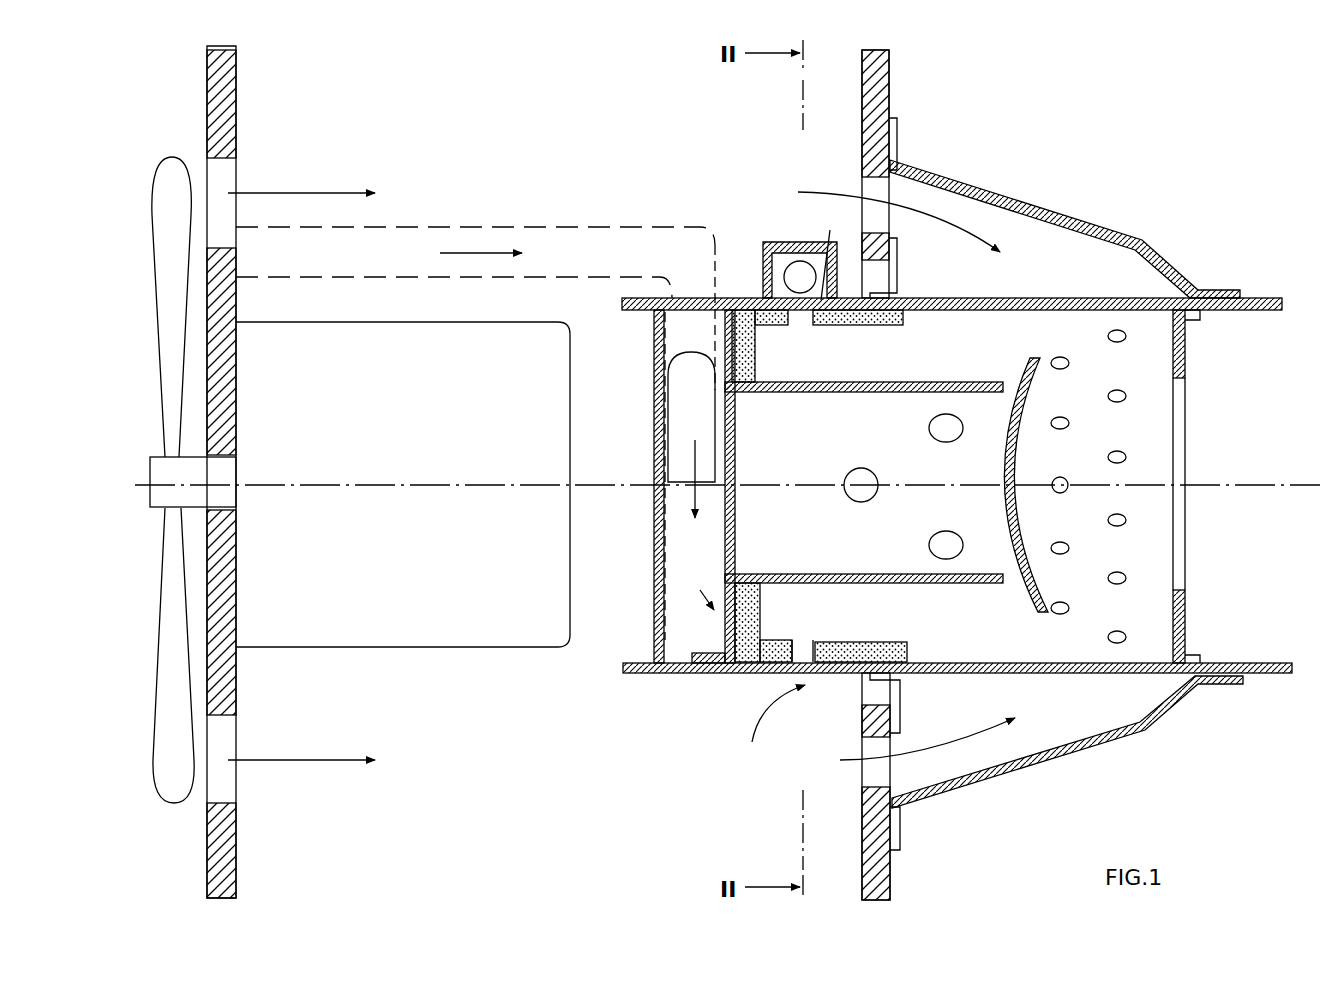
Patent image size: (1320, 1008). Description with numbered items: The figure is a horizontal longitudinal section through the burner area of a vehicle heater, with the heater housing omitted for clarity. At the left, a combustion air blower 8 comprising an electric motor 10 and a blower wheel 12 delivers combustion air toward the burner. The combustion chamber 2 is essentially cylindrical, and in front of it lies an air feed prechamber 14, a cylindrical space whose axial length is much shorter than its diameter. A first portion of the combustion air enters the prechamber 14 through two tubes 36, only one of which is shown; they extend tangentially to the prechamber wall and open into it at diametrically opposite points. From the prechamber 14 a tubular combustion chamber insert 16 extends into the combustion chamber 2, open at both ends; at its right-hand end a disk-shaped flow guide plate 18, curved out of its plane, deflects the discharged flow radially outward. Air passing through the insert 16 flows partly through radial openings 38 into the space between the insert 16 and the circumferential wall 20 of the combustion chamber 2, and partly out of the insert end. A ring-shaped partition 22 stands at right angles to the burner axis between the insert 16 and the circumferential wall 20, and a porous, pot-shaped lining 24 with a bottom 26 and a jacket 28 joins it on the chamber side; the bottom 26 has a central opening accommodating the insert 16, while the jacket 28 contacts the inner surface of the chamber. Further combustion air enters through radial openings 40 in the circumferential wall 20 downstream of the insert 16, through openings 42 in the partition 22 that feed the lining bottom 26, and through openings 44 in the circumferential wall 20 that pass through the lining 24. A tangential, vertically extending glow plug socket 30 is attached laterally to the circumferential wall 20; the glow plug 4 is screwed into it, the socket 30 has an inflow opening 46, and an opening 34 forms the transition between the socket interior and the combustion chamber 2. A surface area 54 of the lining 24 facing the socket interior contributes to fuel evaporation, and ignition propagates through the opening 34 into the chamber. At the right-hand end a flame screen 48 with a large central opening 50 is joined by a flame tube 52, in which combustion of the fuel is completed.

The combustion chamber 2 is at (1005, 330).
The glow plug 4 is at (798, 277).
The combustion air blower 8 is at (435, 298).
The electric motor 10 is at (445, 640).
The blower wheel 12 is at (172, 690).
The air feed prechamber 14 is at (672, 578).
The combustion chamber insert 16 is at (925, 583).
The flow guide plate 18 is at (1020, 578).
The circumferential wall 20 is at (942, 673).
The partition 22 is at (727, 630).
The lining 24 is at (788, 636).
The bottom 26 is at (745, 602).
The jacket 28 is at (855, 642).
The glow plug socket 30 is at (765, 256).
The opening 34 is at (797, 325).
The tubes 36 is at (668, 428).
The radial openings 38 is at (855, 495).
The radial openings 40 is at (1126, 524).
The openings 42 is at (722, 352).
The openings 44 is at (800, 673).
The inflow opening 46 is at (796, 240).
The flame screen 48 is at (1185, 350).
The central opening 50 is at (1185, 420).
The flame tube 52 is at (1270, 663).
The surface area 54 is at (832, 251).